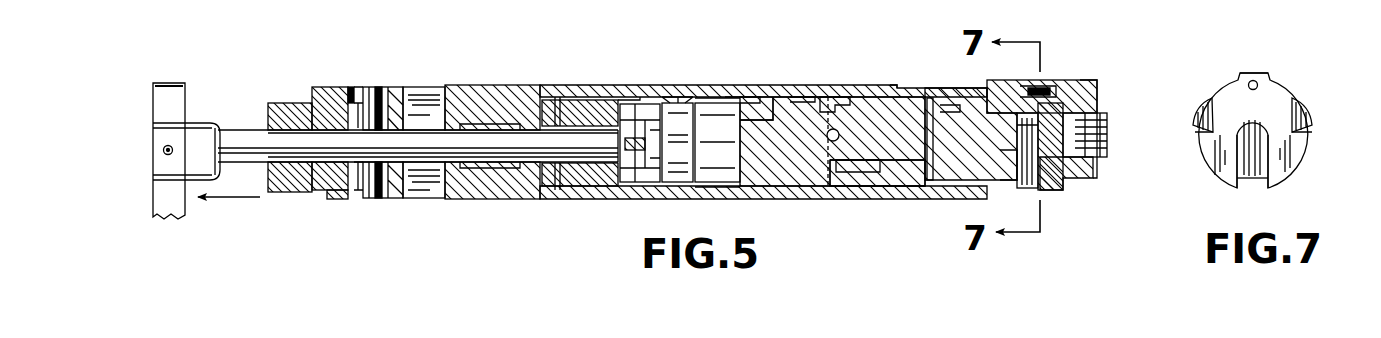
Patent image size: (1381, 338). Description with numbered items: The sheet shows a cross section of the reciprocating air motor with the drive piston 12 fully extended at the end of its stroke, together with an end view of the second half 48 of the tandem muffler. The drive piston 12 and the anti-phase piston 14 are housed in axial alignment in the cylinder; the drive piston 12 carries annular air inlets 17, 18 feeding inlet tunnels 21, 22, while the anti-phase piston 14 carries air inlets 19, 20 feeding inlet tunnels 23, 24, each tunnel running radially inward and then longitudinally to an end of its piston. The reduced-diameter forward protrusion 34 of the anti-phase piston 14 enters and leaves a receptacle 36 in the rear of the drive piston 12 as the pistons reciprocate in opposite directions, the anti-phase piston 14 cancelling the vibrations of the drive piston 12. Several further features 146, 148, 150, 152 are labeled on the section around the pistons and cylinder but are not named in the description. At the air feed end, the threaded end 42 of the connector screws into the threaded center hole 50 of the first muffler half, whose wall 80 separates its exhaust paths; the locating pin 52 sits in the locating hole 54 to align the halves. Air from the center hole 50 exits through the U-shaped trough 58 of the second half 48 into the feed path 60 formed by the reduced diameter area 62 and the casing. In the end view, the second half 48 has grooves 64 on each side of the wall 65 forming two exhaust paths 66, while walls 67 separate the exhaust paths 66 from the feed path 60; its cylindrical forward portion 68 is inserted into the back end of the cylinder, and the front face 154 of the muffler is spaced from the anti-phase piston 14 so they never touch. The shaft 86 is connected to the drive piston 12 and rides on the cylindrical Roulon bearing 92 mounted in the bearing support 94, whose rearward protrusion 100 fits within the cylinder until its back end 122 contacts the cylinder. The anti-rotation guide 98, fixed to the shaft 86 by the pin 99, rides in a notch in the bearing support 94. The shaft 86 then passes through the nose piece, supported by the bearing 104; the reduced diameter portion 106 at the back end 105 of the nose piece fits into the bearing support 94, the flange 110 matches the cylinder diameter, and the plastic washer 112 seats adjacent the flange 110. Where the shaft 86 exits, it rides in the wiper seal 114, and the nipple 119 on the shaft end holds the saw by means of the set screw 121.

In FIG. 5, the drive piston 12 is at (574, 88).
In FIG. 5, the anti-phase piston 14 is at (797, 174).
In FIG. 5, the air inlet 17 is at (607, 199).
In FIG. 5, the air inlet 18 is at (666, 98).
In FIG. 5, the air inlet 19 is at (843, 199).
In FIG. 5, the air inlet 20 is at (864, 88).
In FIG. 5, the inlet tunnel 21 is at (628, 96).
In FIG. 5, the inlet tunnel 22 is at (576, 199).
In FIG. 5, the inlet tunnel 23 is at (876, 197).
In FIG. 5, the inlet tunnel 24 is at (830, 88).
In FIG. 5, the forward protrusion 34 is at (753, 190).
In FIG. 5, the receptacle 36 is at (717, 88).
In FIG. 5, the threaded end 42 is at (1107, 120).
In FIG. 7, the second half of tandem muffler 48 is at (1318, 106).
In FIG. 5, the threaded center hole 50 is at (1053, 193).
In FIG. 5, the locating pin 52 is at (1040, 86).
In FIG. 7, the locating pin 52 is at (1272, 80).
In FIG. 5, the locating hole 54 is at (1042, 85).
In FIG. 5, the U-shaped trough 58 is at (1028, 190).
In FIG. 7, the U-shaped trough 58 is at (1297, 176).
In FIG. 7, the feed path 60 is at (1263, 190).
In FIG. 5, the reduced diameter area 62 is at (1000, 183).
In FIG. 7, the grooves 64 is at (1195, 128).
In FIG. 5, the wall 65 is at (1028, 91).
In FIG. 7, the wall 65 is at (1257, 82).
In FIG. 7, the exhaust paths 66 is at (1203, 100).
In FIG. 7, the walls 67 is at (1206, 180).
In FIG. 5, the cylindrical forward portion 68 is at (949, 200).
In FIG. 5, the wall 80 is at (1088, 82).
In FIG. 5, the shaft 86 is at (226, 128).
In FIG. 5, the cylindrical Roulon bearing 92 is at (492, 199).
In FIG. 5, the bearing support 94 is at (470, 92).
In FIG. 5, the anti-rotation guide 98 is at (388, 203).
In FIG. 5, the pin 99 is at (392, 98).
In FIG. 5, the rearward protrusion 100 is at (533, 92).
In FIG. 5, the bearing 104 is at (302, 110).
In FIG. 5, the back end 105 is at (364, 198).
In FIG. 5, the reduced diameter portion 106 is at (358, 100).
In FIG. 5, the flange 110 is at (349, 87).
In FIG. 5, the plastic washer 112 is at (337, 199).
In FIG. 5, the wiper seal 114 is at (233, 130).
In FIG. 5, the nipple 119 is at (162, 151).
In FIG. 5, the set screw 121 is at (162, 158).
In FIG. 5, the back end 122 is at (539, 200).
In FIG. 5, the bushing 146 is at (583, 97).
In FIG. 5, the shoulder 148 is at (910, 88).
In FIG. 5, the groove 150 is at (738, 88).
In FIG. 5, the groove 152 is at (803, 90).
In FIG. 5, the front face 154 is at (930, 198).